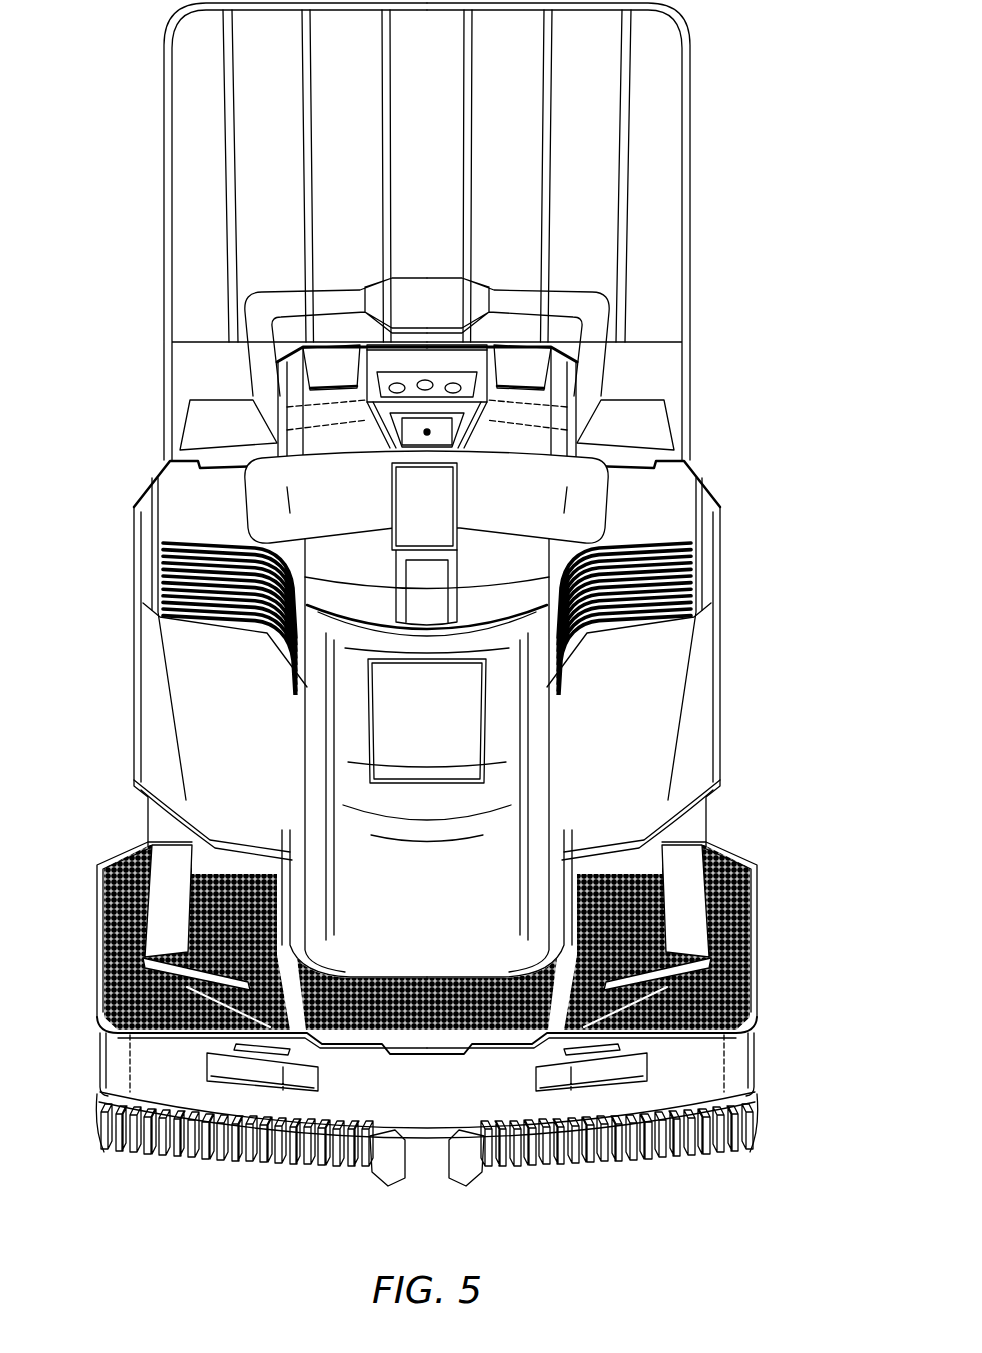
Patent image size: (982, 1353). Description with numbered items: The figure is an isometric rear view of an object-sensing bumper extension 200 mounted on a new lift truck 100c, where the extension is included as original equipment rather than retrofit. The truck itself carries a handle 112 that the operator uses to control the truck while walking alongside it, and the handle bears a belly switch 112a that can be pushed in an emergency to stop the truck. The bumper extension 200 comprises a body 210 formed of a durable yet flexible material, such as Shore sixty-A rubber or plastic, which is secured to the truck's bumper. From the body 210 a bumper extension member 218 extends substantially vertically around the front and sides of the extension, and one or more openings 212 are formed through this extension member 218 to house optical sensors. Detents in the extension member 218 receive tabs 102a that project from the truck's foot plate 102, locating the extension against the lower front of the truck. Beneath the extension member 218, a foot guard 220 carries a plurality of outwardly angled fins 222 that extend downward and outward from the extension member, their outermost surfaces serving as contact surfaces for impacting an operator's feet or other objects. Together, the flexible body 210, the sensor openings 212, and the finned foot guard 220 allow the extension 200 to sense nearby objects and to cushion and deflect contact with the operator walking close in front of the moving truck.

The object-sensing bumper extension 200 is at (434, 647).
The new lift truck 100c is at (403, 727).
The foot plate 102 is at (208, 933).
The tabs 102a is at (562, 1052).
The handle 112 is at (253, 507).
The belly switch 112a is at (401, 521).
The body 210 is at (760, 1048).
The openings 212 is at (200, 1068).
The bumper extension member 218 is at (665, 1077).
The foot guard 220 is at (233, 1165).
The fins 222 is at (352, 1175).